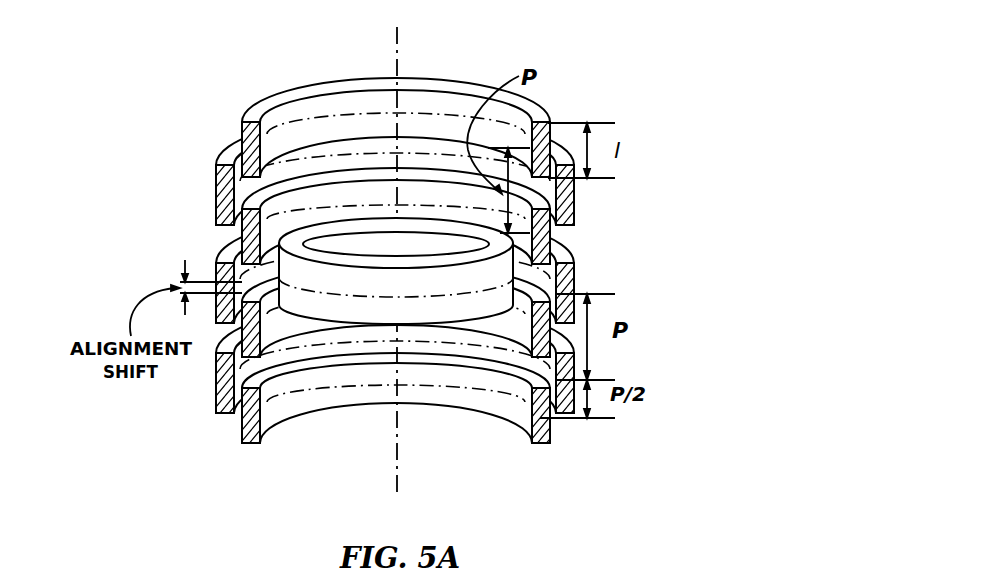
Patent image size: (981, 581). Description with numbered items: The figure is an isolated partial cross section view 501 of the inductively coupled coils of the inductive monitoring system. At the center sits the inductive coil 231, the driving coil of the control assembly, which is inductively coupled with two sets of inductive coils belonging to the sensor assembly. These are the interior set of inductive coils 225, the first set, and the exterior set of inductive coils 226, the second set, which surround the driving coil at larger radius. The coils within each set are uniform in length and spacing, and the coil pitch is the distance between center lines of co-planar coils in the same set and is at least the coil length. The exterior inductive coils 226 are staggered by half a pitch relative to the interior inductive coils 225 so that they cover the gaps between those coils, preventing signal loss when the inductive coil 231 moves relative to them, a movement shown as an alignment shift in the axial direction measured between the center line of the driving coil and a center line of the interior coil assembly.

The isolated partial cross section view 501 is at (607, 26).
The interior set of inductive coils 225 is at (243, 141).
The exterior set of inductive coils 226 is at (217, 188).
The inductive coil 231 is at (394, 279).